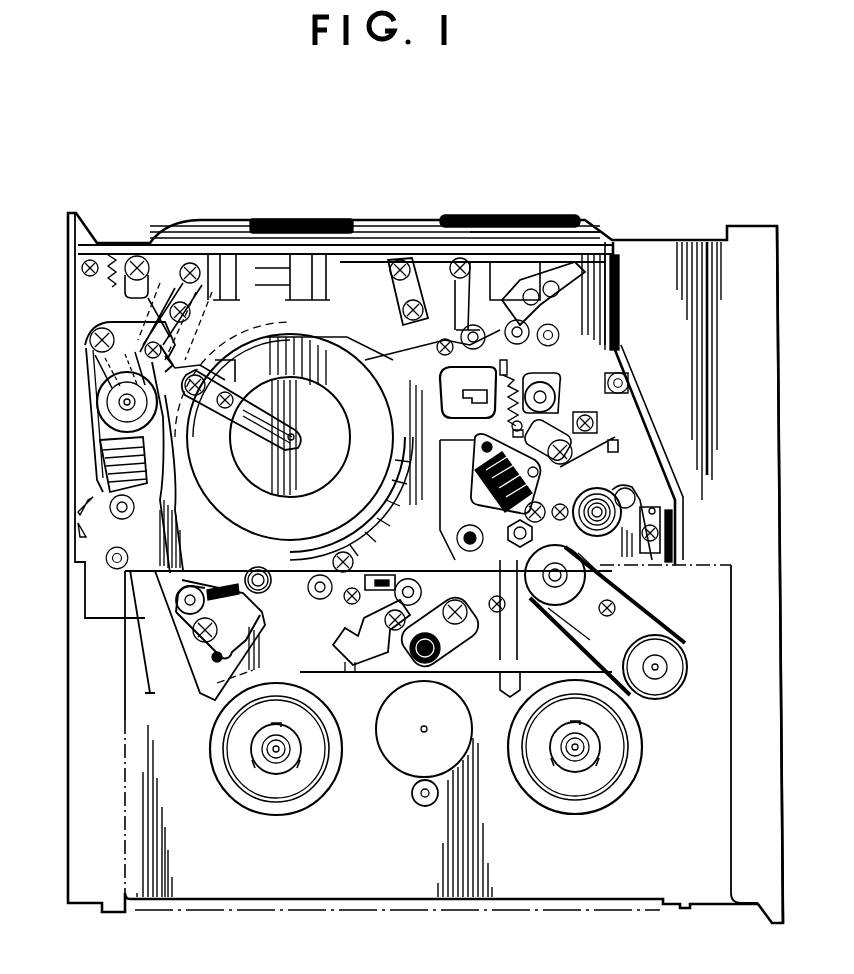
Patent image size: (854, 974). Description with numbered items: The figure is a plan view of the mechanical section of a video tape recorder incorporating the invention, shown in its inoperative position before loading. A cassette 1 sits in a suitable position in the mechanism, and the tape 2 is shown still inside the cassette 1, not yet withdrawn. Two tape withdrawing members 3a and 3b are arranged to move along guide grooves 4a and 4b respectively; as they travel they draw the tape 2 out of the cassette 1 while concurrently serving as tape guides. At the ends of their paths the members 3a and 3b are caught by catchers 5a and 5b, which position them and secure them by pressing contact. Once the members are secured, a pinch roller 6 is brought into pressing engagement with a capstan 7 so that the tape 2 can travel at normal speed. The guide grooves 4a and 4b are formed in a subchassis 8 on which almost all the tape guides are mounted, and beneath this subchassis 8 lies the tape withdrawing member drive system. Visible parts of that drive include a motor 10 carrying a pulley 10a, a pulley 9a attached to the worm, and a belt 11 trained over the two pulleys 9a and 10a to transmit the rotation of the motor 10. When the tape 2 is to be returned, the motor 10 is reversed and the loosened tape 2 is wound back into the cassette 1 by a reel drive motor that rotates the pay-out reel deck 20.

The cassette 1 is at (130, 801).
The tape 2 is at (138, 667).
The tape withdrawing member 3a is at (150, 693).
The tape withdrawing member 3b is at (364, 655).
The guide groove 4a is at (170, 540).
The guide groove 4b is at (390, 504).
The catcher 5a is at (158, 258).
The catcher 5b is at (430, 290).
The pinch roller 6 is at (598, 490).
The capstan 7 is at (600, 548).
The subchassis 8 is at (632, 420).
The pulley 9a is at (293, 218).
The motor 10 is at (618, 268).
The pulley 10a is at (550, 216).
The belt 11 is at (397, 222).
The pay-out reel deck 20 is at (237, 798).